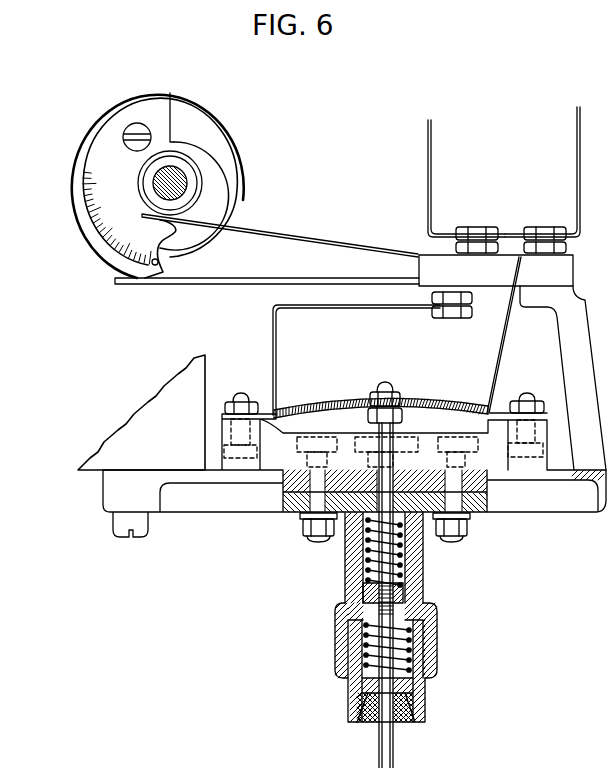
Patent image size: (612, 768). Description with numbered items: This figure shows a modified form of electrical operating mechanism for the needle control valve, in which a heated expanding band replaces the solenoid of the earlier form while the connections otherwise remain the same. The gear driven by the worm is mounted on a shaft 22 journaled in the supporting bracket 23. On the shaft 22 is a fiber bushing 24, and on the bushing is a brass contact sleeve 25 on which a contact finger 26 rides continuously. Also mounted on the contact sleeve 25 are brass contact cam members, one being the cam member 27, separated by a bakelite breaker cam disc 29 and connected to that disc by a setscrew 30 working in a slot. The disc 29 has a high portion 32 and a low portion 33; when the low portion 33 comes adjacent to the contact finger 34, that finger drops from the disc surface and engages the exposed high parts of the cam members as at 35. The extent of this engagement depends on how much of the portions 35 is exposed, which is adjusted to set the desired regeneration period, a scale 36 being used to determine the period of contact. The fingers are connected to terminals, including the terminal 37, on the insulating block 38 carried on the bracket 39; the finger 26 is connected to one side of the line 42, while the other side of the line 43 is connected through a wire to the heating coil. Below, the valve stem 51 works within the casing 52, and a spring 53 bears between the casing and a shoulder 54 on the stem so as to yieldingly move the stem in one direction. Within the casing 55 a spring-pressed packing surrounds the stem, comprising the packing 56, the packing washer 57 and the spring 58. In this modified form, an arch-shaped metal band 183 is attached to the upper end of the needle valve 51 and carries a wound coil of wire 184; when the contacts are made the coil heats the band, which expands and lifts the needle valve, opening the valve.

The shaft 22 is at (184, 177).
The supporting bracket 23 is at (127, 430).
The fiber bushing 24 is at (180, 160).
The brass contact sleeve 25 is at (194, 161).
The contact finger 26 is at (300, 237).
The brass contact cam member 27 is at (216, 208).
The bakelite breaker cam disc 29 is at (188, 87).
The setscrew 30 is at (140, 124).
The high portion 32 is at (100, 257).
The low portion 33 is at (243, 190).
The contact finger 34 is at (242, 284).
The exposed portion of contact cam members 35 is at (157, 272).
The scale 36 is at (477, 226).
The terminal 37 is at (452, 320).
The insulating block 38 is at (427, 269).
The bracket 39 is at (570, 356).
The line 42 is at (431, 149).
The line 43 is at (577, 132).
The valve stem 51 is at (417, 567).
The casing 52 is at (423, 588).
The spring 53 is at (345, 567).
The shoulder 54 is at (352, 603).
The casing 55 is at (425, 688).
The packing 56 is at (407, 722).
The packing washer 57 is at (427, 695).
The spring 58 is at (340, 630).
The arch-shaped metal band 183 is at (272, 415).
The coil of wire 184 is at (318, 404).